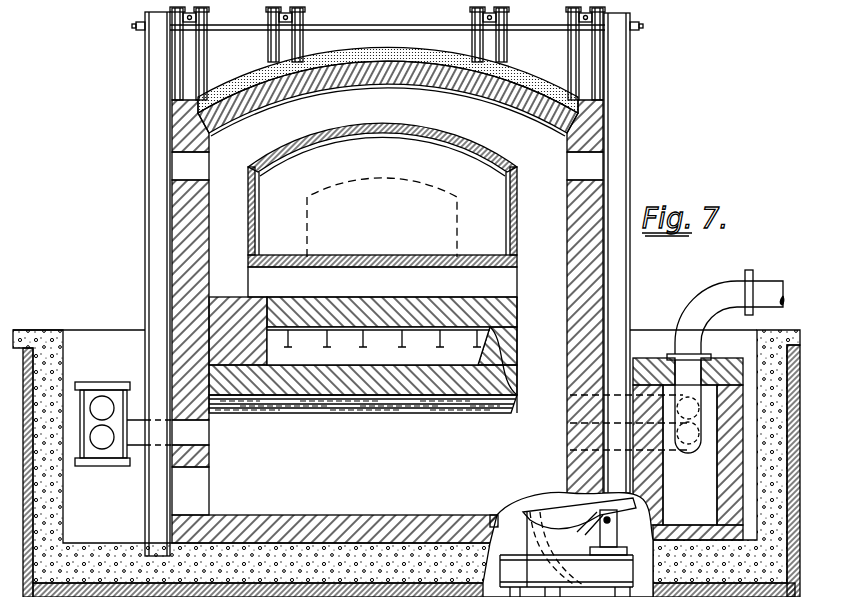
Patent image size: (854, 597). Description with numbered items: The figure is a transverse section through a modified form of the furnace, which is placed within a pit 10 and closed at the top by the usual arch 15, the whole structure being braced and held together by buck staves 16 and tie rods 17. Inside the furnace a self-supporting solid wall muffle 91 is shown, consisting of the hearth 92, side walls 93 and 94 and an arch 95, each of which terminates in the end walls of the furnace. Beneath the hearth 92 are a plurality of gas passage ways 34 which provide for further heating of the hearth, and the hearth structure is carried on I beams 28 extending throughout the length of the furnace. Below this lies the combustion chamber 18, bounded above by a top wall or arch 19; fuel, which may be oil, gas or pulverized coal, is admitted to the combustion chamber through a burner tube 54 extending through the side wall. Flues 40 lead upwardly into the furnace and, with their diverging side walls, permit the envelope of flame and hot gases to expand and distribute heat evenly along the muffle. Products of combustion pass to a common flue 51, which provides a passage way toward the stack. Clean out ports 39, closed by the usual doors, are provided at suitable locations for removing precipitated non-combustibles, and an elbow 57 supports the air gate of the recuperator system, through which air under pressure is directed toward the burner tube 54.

The pit 10 is at (102, 453).
The arch 15 is at (460, 83).
The buck staves 16 is at (261, 48).
The tie rods 17 is at (343, 25).
The combustion chamber 18 is at (387, 505).
The top wall or arch 19 is at (383, 397).
The I beams 28 is at (440, 337).
The gas passage ways 34 is at (382, 282).
The clean out ports 39 is at (387, 307).
The flues 40 is at (521, 355).
The common flue 51 is at (656, 449).
The burner tube 54 is at (168, 433).
The elbow 57 is at (713, 297).
The self-supporting solid wall muffle 91 is at (418, 138).
The hearth 92 is at (363, 257).
The side wall 93 is at (258, 232).
The side wall 94 is at (508, 204).
The arch 95 is at (497, 154).